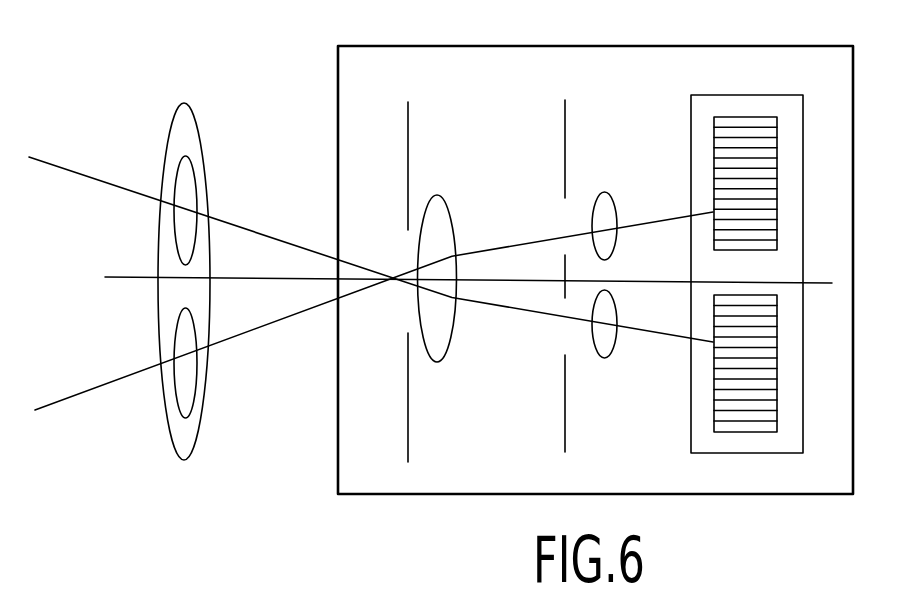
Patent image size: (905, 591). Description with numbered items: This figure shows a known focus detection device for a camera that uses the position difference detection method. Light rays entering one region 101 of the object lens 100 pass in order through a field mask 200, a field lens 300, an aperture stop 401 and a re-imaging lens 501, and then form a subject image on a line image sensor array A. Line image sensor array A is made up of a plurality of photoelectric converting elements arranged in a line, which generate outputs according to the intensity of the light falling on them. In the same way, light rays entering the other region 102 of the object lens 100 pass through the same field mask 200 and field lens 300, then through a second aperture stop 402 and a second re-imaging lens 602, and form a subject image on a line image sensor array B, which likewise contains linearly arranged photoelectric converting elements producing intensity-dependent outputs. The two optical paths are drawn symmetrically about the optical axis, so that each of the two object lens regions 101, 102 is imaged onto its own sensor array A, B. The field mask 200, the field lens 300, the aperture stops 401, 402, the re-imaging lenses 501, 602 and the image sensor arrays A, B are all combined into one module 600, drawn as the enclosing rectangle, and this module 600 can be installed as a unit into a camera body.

The object lens 100 is at (192, 118).
The region of the object lens 101 is at (190, 200).
The region of the object lens 102 is at (180, 380).
The field mask 200 is at (408, 128).
The field lens 300 is at (440, 230).
The aperture stop 401 is at (562, 332).
The aperture stop 402 is at (572, 222).
The re-imaging lens 501 is at (615, 345).
The imaging lens for sensor B 602 is at (613, 213).
The module 600 is at (547, 47).
The line image sensor array A is at (793, 342).
The line image sensor array B is at (790, 162).